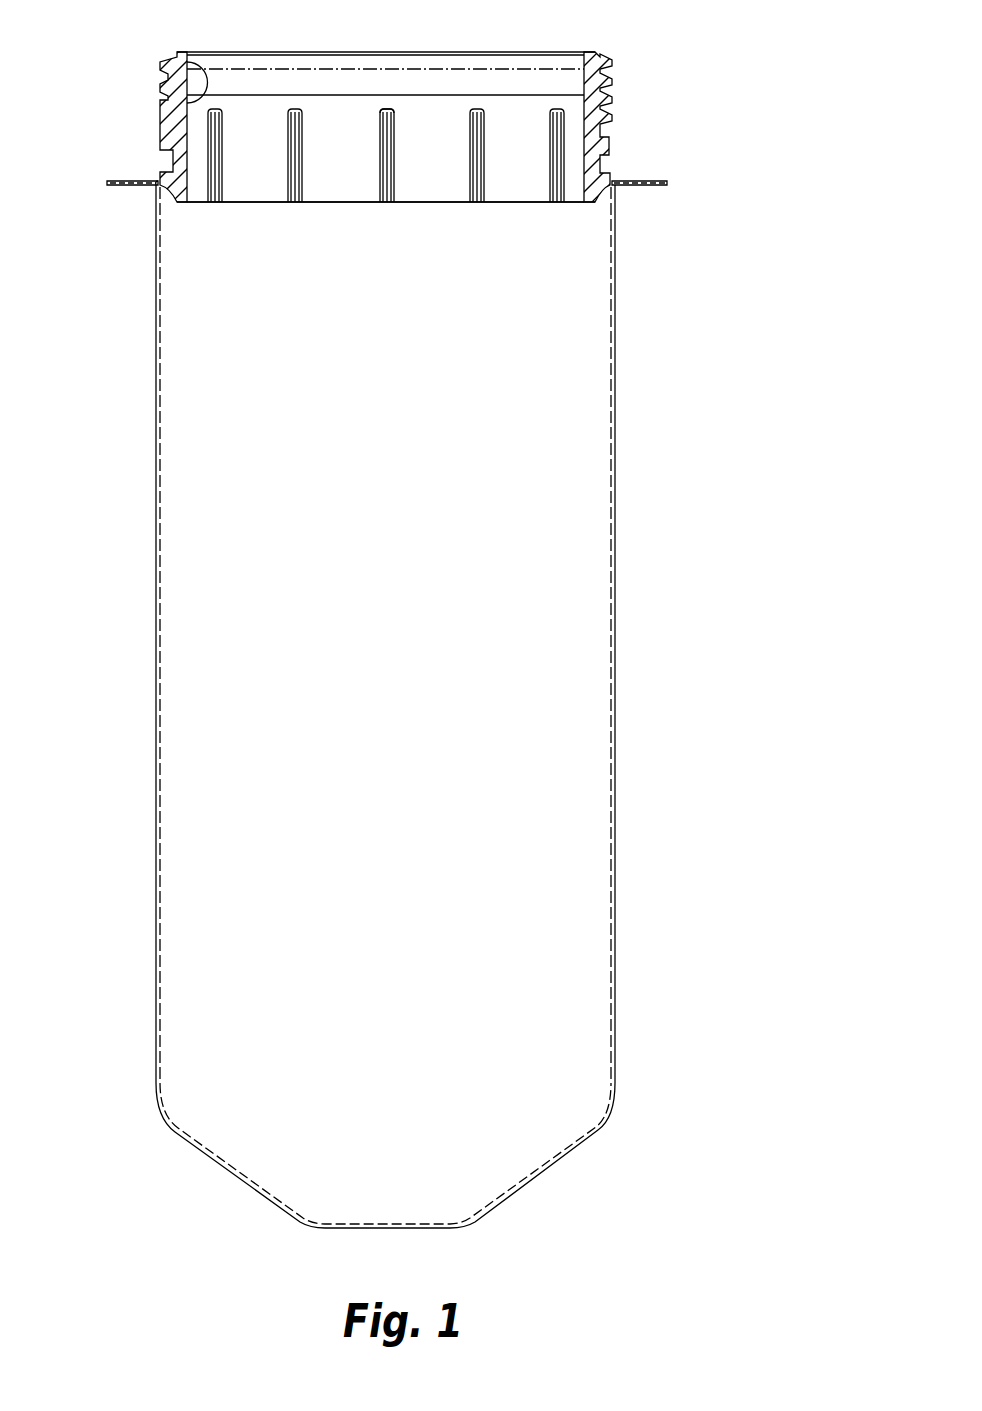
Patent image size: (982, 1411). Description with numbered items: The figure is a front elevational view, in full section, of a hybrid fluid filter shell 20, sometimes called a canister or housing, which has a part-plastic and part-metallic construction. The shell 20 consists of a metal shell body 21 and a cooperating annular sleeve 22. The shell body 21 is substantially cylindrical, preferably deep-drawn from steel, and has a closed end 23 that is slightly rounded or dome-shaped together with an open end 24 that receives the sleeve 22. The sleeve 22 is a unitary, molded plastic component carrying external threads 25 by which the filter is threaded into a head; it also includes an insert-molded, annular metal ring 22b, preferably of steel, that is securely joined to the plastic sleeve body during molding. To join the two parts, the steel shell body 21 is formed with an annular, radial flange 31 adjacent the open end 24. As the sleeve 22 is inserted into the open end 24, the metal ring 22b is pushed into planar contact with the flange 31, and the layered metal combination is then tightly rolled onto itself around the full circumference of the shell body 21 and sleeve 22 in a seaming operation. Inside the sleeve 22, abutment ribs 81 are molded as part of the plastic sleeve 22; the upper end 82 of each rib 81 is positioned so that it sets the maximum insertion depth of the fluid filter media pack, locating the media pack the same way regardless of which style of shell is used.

The hybrid fluid filter shell 20 is at (690, 34).
The metal shell body 21 is at (157, 647).
The annular sleeve 22 is at (162, 113).
The insert-molded annular metal ring 22b is at (655, 183).
The closed end 23 is at (337, 1228).
The open end 24 is at (337, 202).
The external threads 25 is at (162, 87).
The annular radial flange 31 is at (130, 185).
The abutment ribs 81 is at (380, 152).
The upper end of rib 82 is at (387, 109).